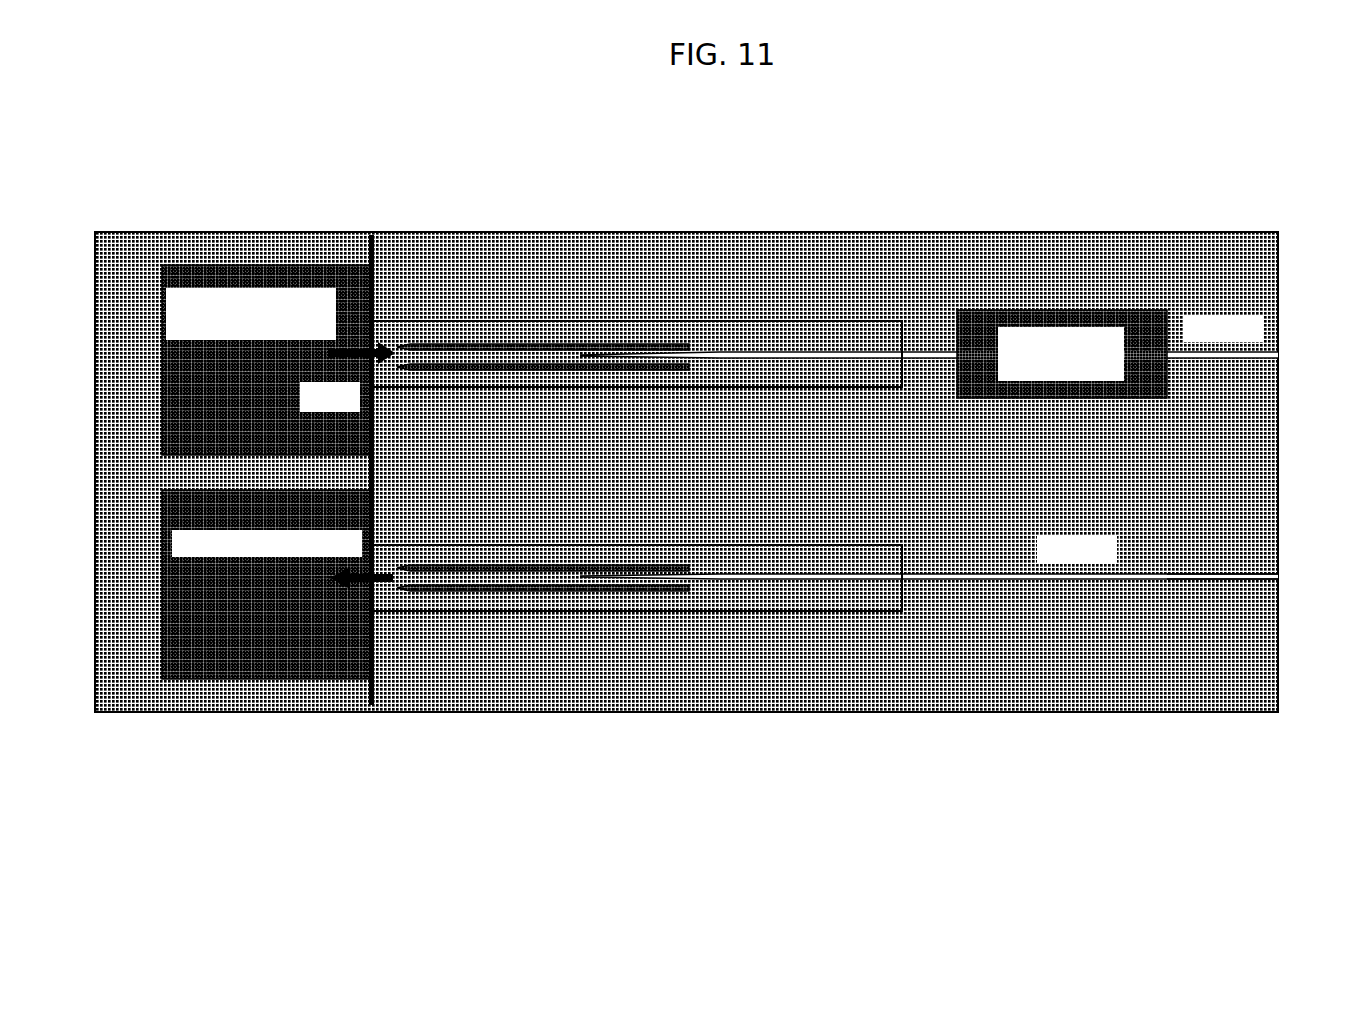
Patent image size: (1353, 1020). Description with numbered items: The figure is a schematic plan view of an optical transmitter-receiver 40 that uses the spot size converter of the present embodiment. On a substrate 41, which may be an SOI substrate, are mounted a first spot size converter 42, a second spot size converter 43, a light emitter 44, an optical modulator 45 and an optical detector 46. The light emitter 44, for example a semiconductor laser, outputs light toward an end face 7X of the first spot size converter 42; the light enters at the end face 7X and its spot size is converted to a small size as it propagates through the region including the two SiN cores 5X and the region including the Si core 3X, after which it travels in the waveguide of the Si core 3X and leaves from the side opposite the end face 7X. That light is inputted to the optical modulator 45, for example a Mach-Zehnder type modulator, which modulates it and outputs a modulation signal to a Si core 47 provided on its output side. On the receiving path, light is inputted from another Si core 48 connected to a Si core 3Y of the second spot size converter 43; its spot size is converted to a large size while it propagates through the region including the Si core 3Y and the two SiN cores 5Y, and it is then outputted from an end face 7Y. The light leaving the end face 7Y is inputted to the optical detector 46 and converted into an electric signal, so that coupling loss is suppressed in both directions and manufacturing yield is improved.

The optical transmitter-receiver 40 is at (909, 220).
The substrate 41 is at (122, 692).
The light emitter 44 is at (240, 280).
The optical detector 46 is at (239, 652).
The optical modulator 45 is at (1057, 310).
The first spot size converter 42 is at (518, 320).
The second spot size converter 43 is at (532, 505).
The end face 7X is at (360, 339).
The end face 7Y is at (362, 600).
The SiN cores 5X is at (436, 355).
The SiN cores 5Y is at (452, 567).
The Si core 3X is at (822, 357).
The Si core 3Y is at (822, 577).
The Si core 47 is at (1222, 357).
The Si core 48 is at (1222, 580).